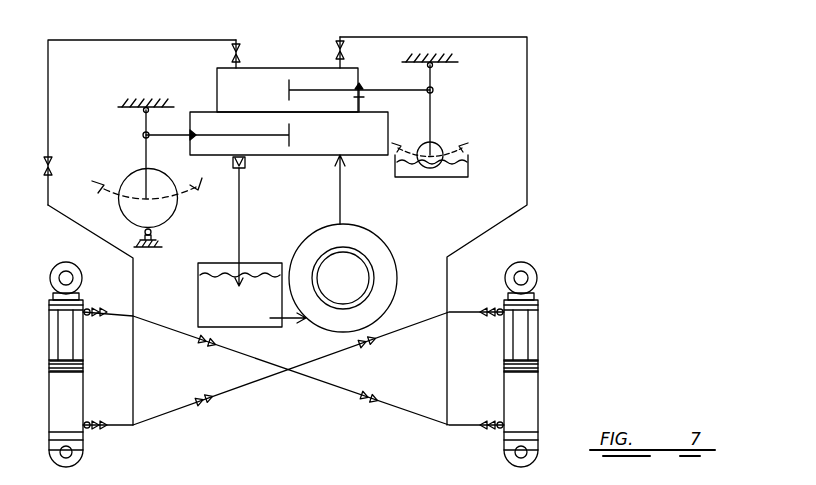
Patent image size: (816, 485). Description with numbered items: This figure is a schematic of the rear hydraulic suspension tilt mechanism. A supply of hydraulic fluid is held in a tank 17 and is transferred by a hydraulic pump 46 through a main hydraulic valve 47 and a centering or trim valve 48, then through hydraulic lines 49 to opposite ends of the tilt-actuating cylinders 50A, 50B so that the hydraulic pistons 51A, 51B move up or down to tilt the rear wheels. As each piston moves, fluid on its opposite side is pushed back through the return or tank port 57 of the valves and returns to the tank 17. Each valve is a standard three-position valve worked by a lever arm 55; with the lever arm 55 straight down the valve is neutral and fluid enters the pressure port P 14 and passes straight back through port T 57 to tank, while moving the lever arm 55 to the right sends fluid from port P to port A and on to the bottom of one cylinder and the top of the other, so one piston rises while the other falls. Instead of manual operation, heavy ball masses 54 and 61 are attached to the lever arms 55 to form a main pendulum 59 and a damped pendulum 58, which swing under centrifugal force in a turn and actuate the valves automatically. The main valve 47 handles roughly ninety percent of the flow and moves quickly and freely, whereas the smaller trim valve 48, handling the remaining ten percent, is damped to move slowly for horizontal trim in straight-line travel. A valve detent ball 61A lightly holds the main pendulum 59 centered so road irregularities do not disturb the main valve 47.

The pressure port P 14 is at (338, 163).
The tank 17 is at (240, 327).
The hydraulic pump 46 is at (355, 255).
The main hydraulic valve 47 is at (327, 125).
The centering or trim valve 48 is at (262, 68).
The hydraulic lines 49 is at (165, 40).
The tilt-actuating cylinder 50A is at (83, 395).
The tilt-actuating cylinder 50B is at (538, 395).
The hydraulic piston 51A is at (83, 369).
The hydraulic piston 51B is at (538, 360).
The mass 54 is at (440, 142).
The lever arm 55 is at (145, 148).
The return or tank port T 57 is at (245, 168).
The damped pendulum 58 is at (470, 162).
The main pendulum 59 is at (128, 176).
The mass 61 is at (121, 215).
The valve detent ball 61A is at (156, 238).